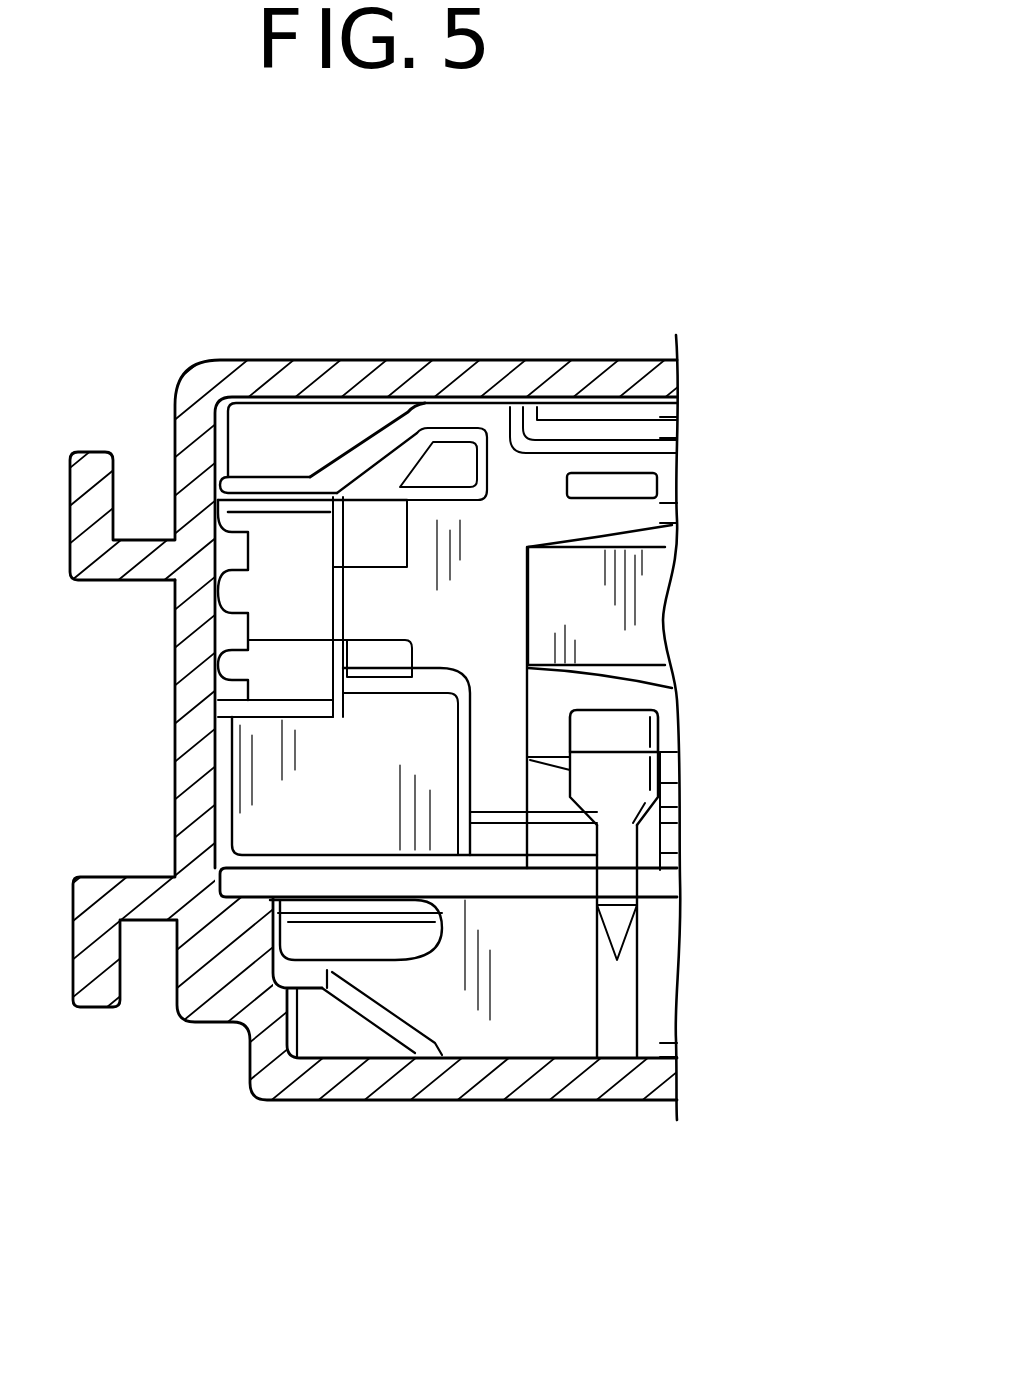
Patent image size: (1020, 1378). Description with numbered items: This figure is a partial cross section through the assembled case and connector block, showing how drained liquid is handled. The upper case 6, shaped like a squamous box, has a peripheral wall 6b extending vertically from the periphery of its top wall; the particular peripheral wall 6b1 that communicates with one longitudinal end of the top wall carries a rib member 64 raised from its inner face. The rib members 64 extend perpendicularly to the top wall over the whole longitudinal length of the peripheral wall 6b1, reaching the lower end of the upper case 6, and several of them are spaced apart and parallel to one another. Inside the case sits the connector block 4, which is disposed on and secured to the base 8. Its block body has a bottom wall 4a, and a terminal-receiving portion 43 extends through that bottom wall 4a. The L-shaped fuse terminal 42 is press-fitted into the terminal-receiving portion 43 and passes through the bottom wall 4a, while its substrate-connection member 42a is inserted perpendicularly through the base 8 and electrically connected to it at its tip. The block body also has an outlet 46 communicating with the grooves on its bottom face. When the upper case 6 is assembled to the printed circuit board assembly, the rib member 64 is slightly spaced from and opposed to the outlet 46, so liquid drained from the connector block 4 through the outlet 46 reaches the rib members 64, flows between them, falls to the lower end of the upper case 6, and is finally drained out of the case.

The upper case 6 is at (317, 357).
The peripheral wall 6b is at (514, 380).
The peripheral wall 6b1 is at (356, 840).
The outlet 46 is at (227, 563).
The rib member 64 is at (222, 600).
The terminal-receiving portion 43 is at (617, 470).
The connector block 4 is at (684, 455).
The bottom wall 4a is at (680, 505).
The fuse terminal 42 is at (683, 733).
The substrate-connection member 42a is at (620, 848).
The base 8 is at (527, 907).